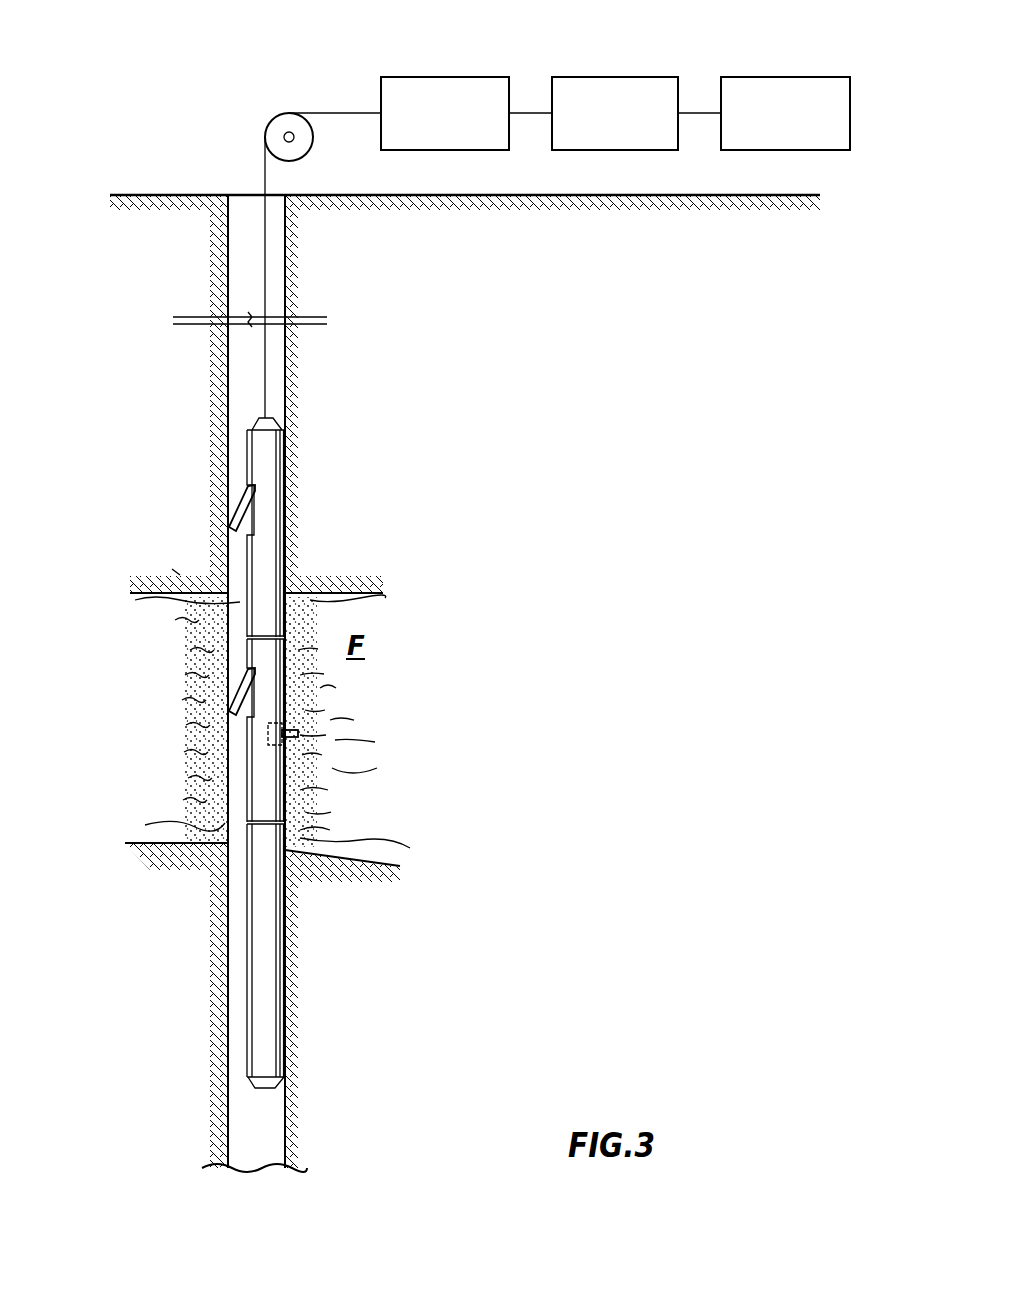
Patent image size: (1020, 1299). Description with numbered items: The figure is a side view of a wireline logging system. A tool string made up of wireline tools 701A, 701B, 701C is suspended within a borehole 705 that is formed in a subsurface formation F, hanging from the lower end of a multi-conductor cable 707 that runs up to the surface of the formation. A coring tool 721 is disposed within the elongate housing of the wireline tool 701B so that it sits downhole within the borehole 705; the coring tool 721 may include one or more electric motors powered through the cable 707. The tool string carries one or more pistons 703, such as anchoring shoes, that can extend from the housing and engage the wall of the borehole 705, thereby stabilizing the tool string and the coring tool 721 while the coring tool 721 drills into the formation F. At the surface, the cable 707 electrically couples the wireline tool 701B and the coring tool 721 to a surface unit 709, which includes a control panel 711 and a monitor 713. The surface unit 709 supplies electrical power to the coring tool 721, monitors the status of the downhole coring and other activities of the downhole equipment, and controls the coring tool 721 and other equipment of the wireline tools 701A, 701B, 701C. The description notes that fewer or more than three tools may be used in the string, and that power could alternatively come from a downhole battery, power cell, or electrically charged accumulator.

The surface unit 709 is at (422, 76).
The control panel 711 is at (593, 77).
The monitor 713 is at (763, 77).
The multi-conductor cable 707 is at (263, 242).
The borehole 705 is at (285, 258).
The pistons 703 is at (240, 500).
The wireline tool 701A is at (272, 508).
The wireline tool 701B is at (262, 798).
The wireline tool 701C is at (267, 1013).
The coring tool 721 is at (298, 728).